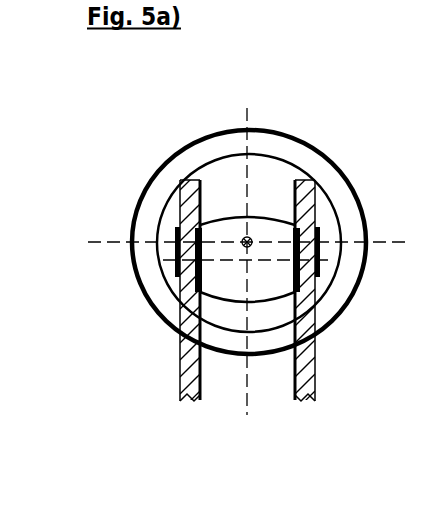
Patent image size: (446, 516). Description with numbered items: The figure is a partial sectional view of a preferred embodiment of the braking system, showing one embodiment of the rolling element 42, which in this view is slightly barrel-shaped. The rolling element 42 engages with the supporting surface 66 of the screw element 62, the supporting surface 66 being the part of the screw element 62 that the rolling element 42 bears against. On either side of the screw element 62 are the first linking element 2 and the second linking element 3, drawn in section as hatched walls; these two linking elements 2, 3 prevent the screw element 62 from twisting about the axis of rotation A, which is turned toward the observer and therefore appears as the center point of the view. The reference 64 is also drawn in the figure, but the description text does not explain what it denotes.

The first linking element 2 is at (313, 362).
The second linking element 3 is at (178, 380).
The rolling element 42 is at (266, 153).
The screw element 62 is at (265, 230).
The sealing lips 64 is at (200, 302).
The supporting surface 66 is at (230, 186).
The axis of rotation A is at (196, 183).